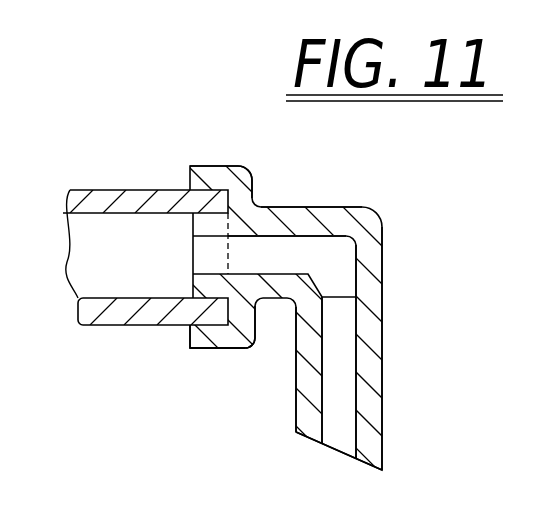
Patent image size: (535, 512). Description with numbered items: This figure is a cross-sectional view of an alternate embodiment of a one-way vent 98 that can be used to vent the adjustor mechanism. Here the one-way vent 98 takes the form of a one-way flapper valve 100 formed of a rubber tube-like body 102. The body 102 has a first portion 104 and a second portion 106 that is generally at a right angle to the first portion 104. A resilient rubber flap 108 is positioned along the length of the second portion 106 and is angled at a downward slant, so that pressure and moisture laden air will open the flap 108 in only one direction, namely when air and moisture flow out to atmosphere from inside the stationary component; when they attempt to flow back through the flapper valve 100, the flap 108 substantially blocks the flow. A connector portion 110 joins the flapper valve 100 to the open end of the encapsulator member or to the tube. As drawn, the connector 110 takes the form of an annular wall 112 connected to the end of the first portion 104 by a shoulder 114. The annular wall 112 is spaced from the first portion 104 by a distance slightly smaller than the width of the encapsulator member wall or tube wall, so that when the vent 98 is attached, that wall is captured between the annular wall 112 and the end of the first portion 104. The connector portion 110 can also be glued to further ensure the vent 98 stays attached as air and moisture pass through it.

The one-way vent 98 is at (122, 165).
The one-way flapper valve 100 is at (386, 240).
The rubber tube-like body 102 is at (368, 449).
The first portion 104 is at (302, 215).
The second portion 106 is at (373, 381).
The resilient flap 108 is at (332, 293).
The connector portion 110 is at (197, 358).
The annular wall 112 is at (234, 338).
The shoulder 114 is at (243, 185).